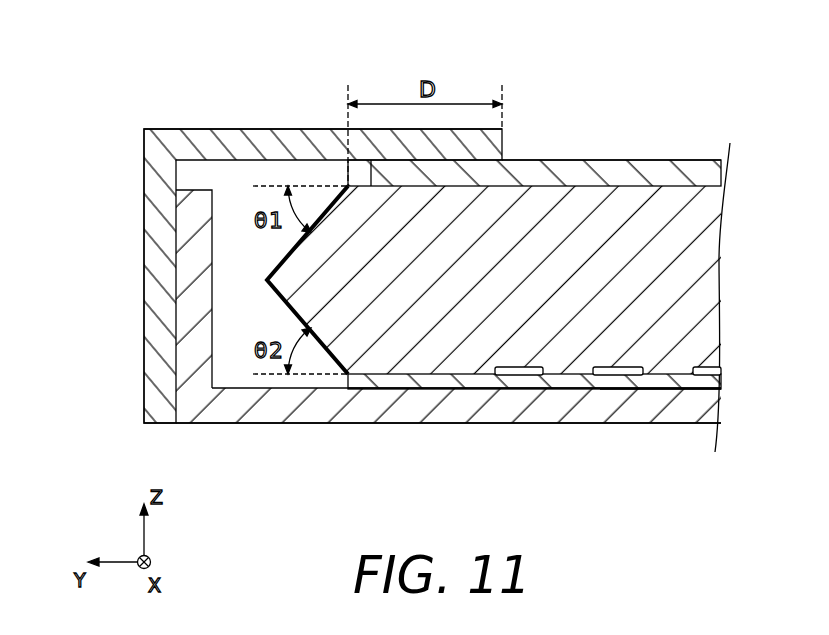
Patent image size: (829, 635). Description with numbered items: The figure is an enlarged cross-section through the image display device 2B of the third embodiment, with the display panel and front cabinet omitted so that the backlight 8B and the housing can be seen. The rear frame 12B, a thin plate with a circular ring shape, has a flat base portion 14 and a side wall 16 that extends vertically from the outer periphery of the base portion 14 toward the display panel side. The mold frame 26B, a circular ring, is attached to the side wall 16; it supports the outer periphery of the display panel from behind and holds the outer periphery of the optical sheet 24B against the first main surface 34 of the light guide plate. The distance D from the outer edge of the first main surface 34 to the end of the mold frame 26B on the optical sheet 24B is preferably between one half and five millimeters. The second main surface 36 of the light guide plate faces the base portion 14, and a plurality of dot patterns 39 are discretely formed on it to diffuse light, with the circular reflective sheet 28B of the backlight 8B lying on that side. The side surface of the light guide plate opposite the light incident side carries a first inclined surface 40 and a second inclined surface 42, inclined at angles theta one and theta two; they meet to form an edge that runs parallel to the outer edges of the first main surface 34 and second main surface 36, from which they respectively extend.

The image display device 2B is at (704, 70).
The backlight 8B is at (221, 91).
The rear frame 12B is at (215, 413).
The base portion 14 is at (495, 410).
The side wall 16 is at (182, 280).
The optical sheet 24B is at (710, 172).
The mold frame 26B is at (276, 146).
The reflective sheet 28B is at (678, 385).
The first main surface 34 is at (690, 178).
The second main surface 36 is at (442, 378).
The dot patterns 39 is at (612, 368).
The first inclined surface 40 is at (280, 264).
The second inclined surface 42 is at (287, 301).